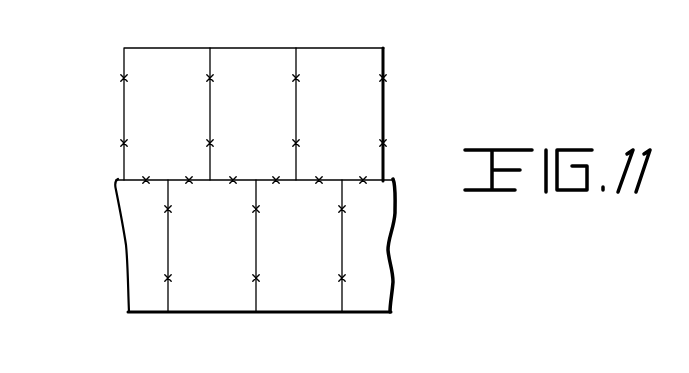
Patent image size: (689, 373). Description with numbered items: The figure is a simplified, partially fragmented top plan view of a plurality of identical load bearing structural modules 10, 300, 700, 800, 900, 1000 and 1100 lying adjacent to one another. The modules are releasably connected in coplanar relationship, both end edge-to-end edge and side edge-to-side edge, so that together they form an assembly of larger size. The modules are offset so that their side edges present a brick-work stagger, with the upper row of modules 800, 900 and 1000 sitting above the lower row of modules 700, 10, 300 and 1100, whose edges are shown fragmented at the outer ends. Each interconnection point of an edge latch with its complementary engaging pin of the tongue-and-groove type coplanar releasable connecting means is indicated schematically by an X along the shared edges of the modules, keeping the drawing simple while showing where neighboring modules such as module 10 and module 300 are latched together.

The load bearing structural module 10 is at (215, 316).
The load bearing structural module 300 is at (297, 318).
The load bearing structural module 700 is at (118, 253).
The load bearing structural module 800 is at (161, 43).
The load bearing structural module 900 is at (265, 43).
The load bearing structural module 1000 is at (361, 43).
The load bearing structural module 1100 is at (400, 263).